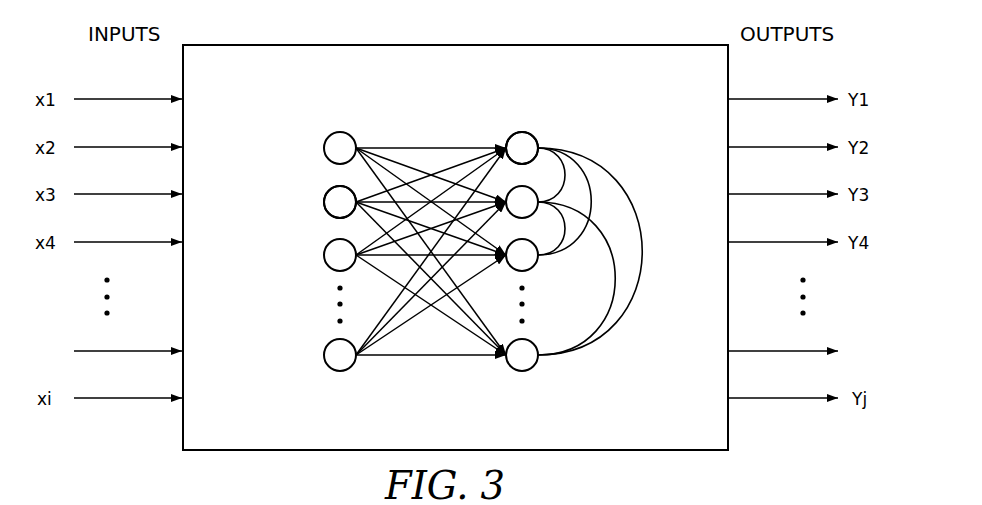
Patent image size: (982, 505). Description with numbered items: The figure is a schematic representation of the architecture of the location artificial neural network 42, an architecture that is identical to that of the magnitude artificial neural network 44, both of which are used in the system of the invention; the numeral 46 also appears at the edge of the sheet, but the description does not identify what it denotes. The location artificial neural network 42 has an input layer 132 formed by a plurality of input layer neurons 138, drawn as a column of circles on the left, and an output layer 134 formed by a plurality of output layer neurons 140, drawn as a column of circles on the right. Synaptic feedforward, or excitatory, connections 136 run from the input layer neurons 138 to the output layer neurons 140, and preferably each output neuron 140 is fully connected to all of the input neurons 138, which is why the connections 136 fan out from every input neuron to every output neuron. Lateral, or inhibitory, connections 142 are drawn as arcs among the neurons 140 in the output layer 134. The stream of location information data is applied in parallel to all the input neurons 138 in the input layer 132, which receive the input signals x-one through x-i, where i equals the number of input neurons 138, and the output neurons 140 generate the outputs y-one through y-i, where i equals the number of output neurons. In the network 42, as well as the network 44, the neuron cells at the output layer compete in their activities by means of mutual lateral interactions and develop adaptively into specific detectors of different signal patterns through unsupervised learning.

The location artificial neural network 42 is at (455, 227).
The magnitude artificial neural network 44 is at (378, 27).
The component 46 is at (642, 499).
The input layer 132 is at (357, 427).
The output layer 134 is at (540, 422).
The synaptic feedforward (excitatory) connections 136 is at (430, 147).
The input layer neuron 138 is at (324, 198).
The output layer neuron 140 is at (527, 133).
The lateral (inhibitory) connections 142 is at (627, 197).